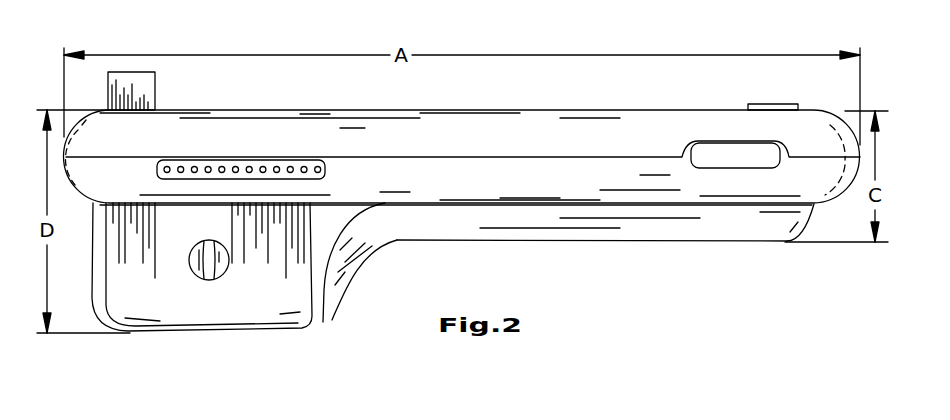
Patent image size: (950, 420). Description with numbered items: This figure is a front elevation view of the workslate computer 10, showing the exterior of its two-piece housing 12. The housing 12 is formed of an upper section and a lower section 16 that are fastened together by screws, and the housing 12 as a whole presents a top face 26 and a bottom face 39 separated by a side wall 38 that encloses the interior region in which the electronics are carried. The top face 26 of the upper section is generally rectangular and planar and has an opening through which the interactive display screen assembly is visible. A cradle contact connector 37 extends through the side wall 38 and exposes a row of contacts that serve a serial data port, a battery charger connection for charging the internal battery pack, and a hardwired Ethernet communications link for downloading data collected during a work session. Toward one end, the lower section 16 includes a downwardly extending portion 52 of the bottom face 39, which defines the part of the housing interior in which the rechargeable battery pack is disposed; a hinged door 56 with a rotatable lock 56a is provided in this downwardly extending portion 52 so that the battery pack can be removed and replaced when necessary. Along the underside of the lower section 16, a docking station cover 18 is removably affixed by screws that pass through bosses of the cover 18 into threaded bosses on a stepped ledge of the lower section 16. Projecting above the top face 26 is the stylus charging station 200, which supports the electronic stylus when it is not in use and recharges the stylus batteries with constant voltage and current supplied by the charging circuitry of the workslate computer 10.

The workslate computer 10 is at (310, 90).
The housing 12 is at (385, 98).
The lower section 16 is at (85, 174).
The docking station cover 18 is at (628, 255).
The top face 26 is at (493, 88).
The cradle contact connector 37 is at (168, 176).
The side wall 38 is at (470, 184).
The bottom face 39 is at (818, 222).
The downwardly extending portion 52 is at (316, 295).
The hinged door 56 is at (202, 267).
The rotatable lock 56a is at (215, 268).
The stylus charging station 200 is at (129, 56).